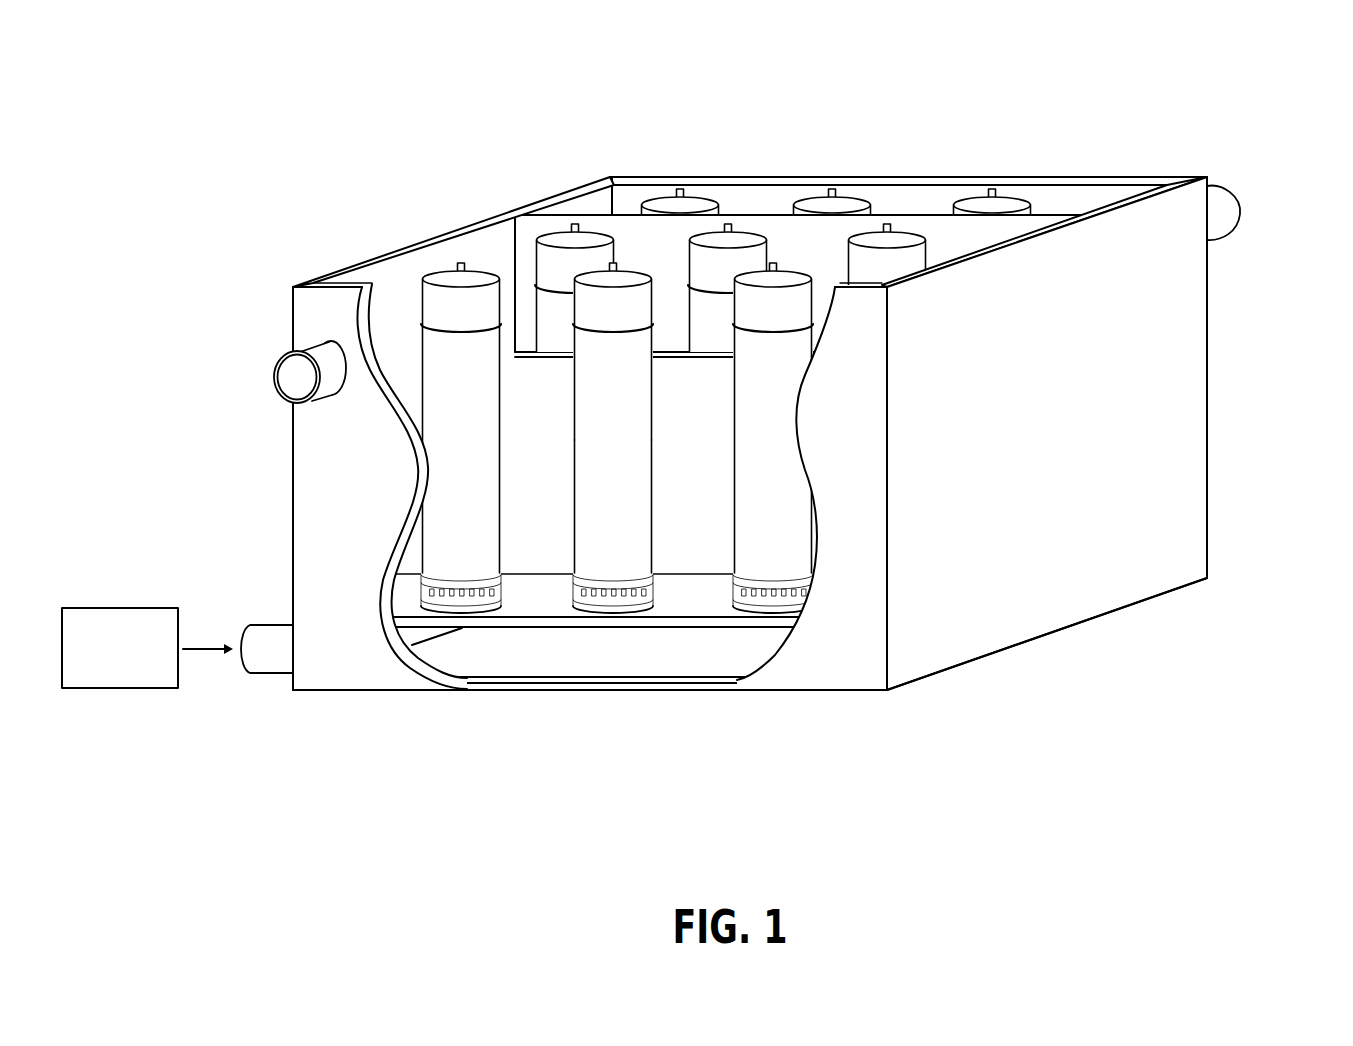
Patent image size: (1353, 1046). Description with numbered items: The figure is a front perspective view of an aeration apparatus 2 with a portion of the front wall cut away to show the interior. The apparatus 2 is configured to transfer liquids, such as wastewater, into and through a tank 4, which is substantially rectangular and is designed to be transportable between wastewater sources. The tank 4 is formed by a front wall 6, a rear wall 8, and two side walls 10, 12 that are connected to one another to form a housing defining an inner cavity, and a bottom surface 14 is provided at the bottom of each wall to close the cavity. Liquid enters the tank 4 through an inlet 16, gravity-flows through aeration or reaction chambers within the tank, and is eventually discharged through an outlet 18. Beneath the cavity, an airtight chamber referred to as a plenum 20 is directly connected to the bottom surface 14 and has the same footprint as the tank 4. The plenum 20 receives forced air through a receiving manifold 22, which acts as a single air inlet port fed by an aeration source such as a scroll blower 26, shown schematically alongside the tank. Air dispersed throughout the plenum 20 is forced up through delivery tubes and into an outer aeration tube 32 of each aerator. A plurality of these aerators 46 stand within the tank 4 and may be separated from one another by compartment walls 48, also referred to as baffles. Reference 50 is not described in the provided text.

The aeration apparatus 2 is at (330, 207).
The tank 4 is at (1158, 412).
The front wall 6 is at (847, 670).
The rear wall 8 is at (1077, 192).
The side wall 10 is at (472, 243).
The side wall 12 is at (1178, 532).
The bottom surface 14 is at (408, 605).
The inlet 16 is at (288, 380).
The outlet 18 is at (1223, 204).
The plenum 20 is at (532, 660).
The receiving manifold 22 is at (260, 663).
The scroll blower 26 is at (88, 622).
The outer aeration tube 32 is at (582, 438).
The aerator 46 is at (598, 416).
The compartment wall 48 is at (698, 560).
The cartridge rack 50 is at (687, 492).